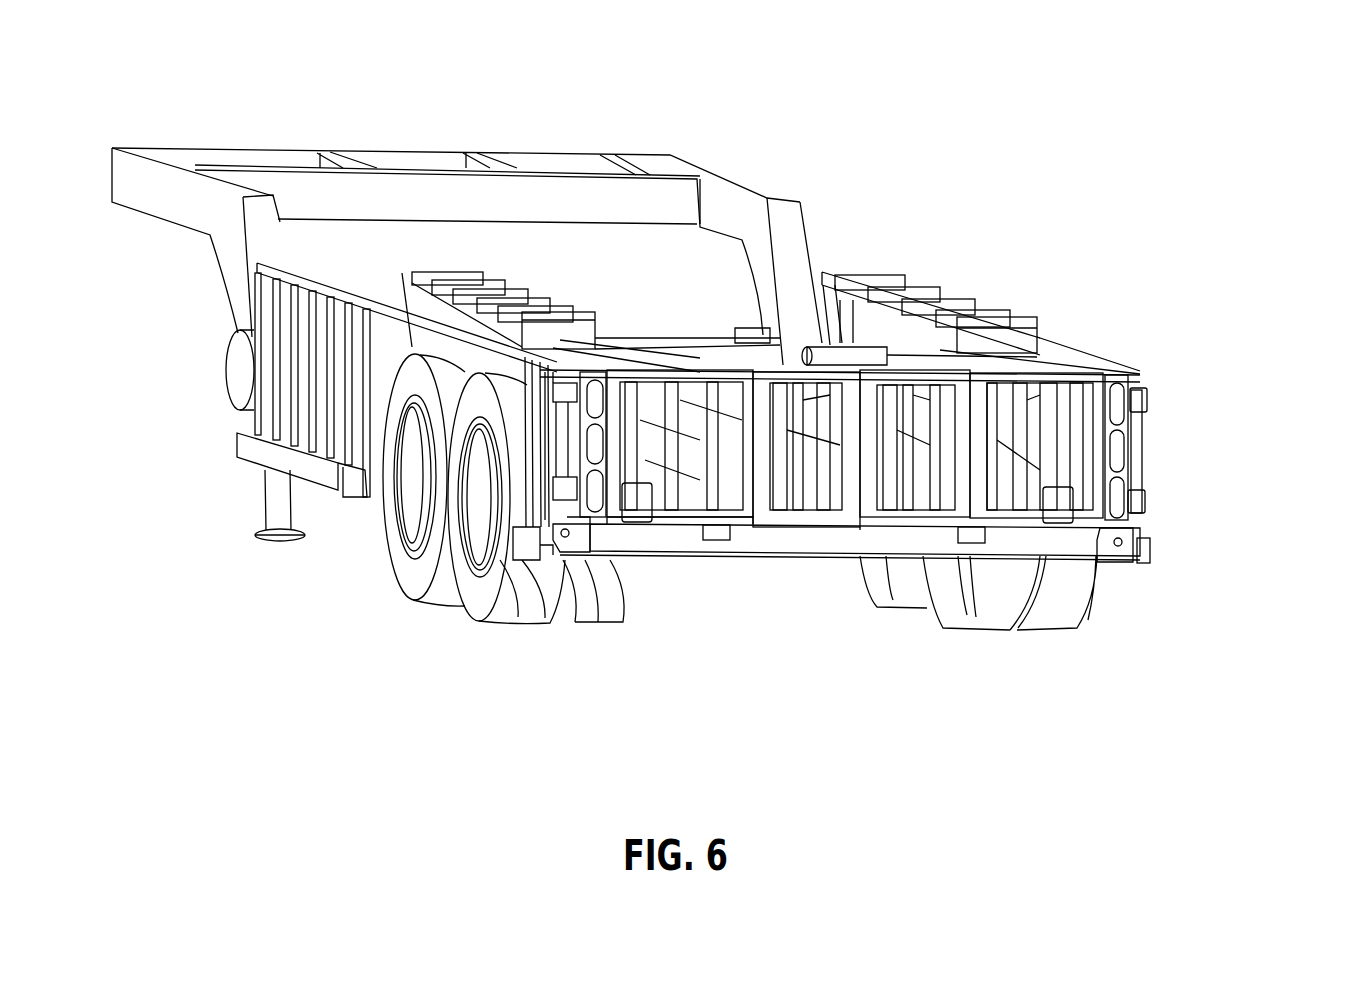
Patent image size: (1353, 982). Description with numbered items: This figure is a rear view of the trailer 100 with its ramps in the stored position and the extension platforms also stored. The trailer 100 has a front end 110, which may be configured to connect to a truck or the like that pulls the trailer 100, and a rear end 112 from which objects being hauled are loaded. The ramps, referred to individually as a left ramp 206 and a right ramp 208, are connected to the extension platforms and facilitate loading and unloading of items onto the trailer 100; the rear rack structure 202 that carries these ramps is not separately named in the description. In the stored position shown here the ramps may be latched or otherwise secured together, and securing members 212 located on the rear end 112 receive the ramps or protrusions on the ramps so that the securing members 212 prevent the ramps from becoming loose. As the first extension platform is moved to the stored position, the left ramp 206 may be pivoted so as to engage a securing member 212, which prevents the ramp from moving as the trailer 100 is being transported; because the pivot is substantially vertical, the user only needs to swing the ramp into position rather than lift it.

The trailer 100 is at (1018, 140).
The front end 110 is at (563, 537).
The rear end 112 is at (1190, 533).
The rack assembly 202 is at (1162, 392).
The left ramp 206 is at (687, 524).
The right ramp 208 is at (1133, 448).
The securing member 212 is at (717, 541).